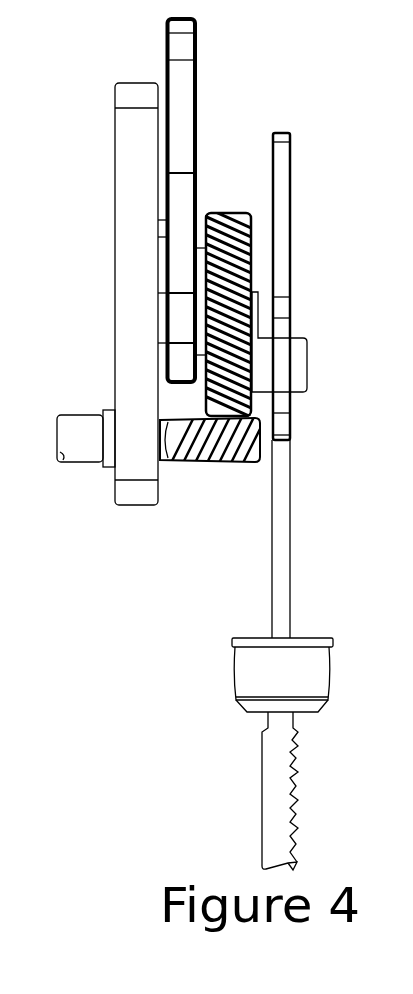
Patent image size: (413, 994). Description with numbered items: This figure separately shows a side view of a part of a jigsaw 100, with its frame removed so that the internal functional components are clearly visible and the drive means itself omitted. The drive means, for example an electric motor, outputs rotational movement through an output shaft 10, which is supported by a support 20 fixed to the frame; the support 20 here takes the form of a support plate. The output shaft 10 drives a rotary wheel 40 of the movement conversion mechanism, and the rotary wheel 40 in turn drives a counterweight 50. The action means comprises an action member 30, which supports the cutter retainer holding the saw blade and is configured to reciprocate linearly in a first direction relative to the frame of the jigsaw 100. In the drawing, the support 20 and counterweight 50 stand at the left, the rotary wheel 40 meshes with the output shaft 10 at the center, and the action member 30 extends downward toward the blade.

The jigsaw 100 is at (93, 108).
The support 20 is at (138, 220).
The counterweight 50 is at (178, 32).
The rotary wheel 40 is at (252, 272).
The output shaft 10 is at (232, 447).
The action member 30 is at (280, 574).